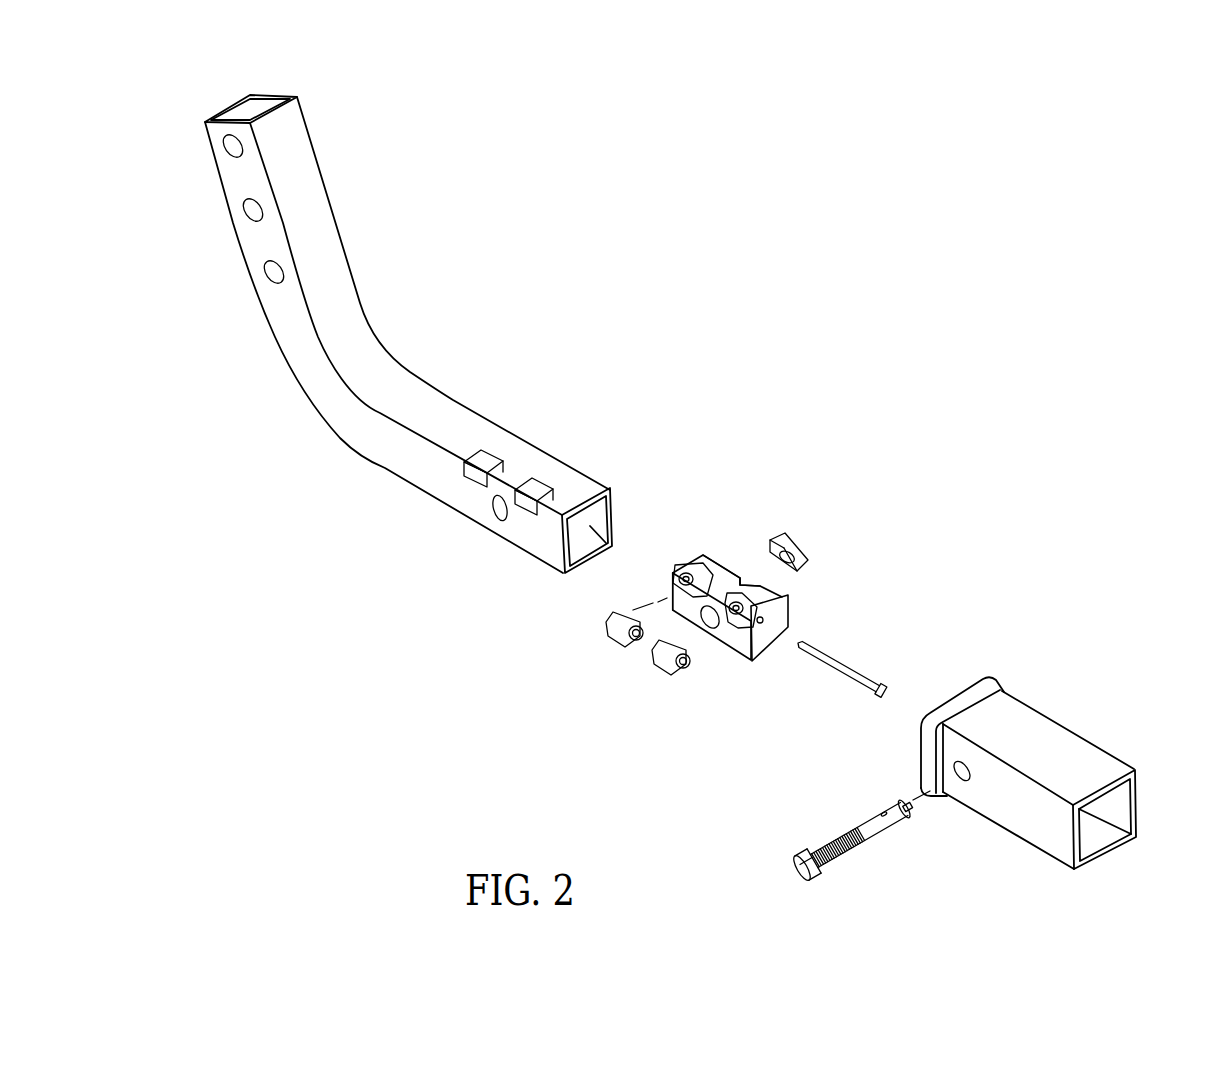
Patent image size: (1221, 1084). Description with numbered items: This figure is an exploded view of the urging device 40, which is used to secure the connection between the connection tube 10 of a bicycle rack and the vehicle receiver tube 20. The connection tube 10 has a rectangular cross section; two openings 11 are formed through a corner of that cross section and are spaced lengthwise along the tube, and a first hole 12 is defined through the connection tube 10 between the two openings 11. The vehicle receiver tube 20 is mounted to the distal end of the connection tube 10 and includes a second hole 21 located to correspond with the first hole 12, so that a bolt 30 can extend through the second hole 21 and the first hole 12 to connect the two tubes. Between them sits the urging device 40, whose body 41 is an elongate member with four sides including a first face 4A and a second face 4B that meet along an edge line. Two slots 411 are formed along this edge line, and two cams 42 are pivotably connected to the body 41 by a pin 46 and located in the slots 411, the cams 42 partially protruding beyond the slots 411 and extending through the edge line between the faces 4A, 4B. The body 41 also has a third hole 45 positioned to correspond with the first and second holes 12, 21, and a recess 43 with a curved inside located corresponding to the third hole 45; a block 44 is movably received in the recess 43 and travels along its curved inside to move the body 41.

The connection tube 10 is at (388, 338).
The openings 11 is at (537, 484).
The first hole 12 is at (494, 519).
The vehicle receiver tube 20 is at (1077, 718).
The second hole 21 is at (968, 763).
The bolt 30 is at (846, 818).
The urging device 40 is at (645, 593).
The first face 4A is at (683, 611).
The second face 4B is at (784, 591).
The body 41 is at (703, 553).
The slots 411 is at (716, 600).
The cams 42 is at (612, 633).
The recess 43 is at (735, 580).
The block 44 is at (790, 543).
The third hole 45 is at (730, 577).
The pin 46 is at (843, 670).